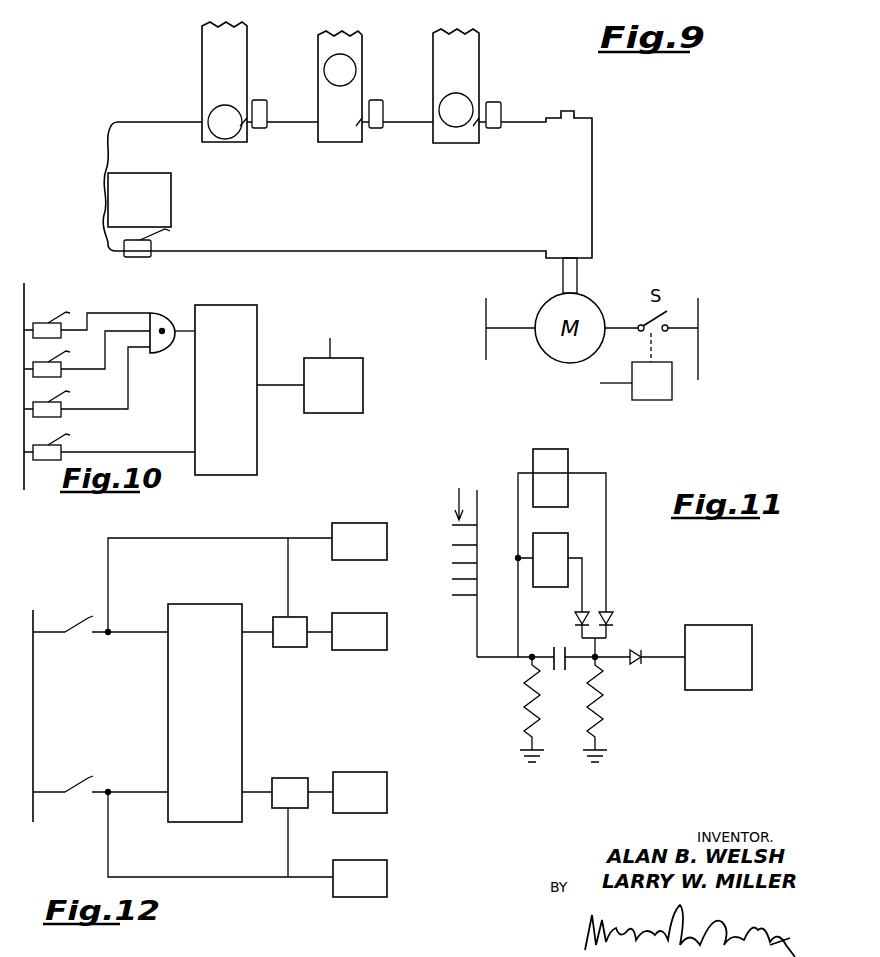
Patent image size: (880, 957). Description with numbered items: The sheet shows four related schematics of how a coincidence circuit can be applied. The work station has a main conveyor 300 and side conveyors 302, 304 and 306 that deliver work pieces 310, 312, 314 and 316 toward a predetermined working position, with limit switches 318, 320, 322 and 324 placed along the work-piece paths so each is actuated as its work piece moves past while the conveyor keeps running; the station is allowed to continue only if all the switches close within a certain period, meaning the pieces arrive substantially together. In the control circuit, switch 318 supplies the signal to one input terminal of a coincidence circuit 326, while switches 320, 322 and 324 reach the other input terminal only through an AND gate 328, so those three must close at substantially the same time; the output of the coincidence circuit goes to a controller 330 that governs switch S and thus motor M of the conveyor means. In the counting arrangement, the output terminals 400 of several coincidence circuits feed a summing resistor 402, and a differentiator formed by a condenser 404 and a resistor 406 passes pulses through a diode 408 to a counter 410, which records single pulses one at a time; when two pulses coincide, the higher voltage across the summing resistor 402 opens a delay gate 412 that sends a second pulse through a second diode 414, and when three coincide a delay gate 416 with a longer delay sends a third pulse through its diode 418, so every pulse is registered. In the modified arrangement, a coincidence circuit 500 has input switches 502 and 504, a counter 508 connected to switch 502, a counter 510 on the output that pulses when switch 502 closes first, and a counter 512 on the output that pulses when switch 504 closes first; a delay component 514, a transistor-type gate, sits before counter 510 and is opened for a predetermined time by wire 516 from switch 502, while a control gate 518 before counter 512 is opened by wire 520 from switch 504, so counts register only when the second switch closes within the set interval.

In FIG. 9, the main conveyor 300 is at (138, 128).
In FIG. 9, the side conveyor 302 is at (203, 40).
In FIG. 9, the side conveyor 304 is at (327, 44).
In FIG. 9, the side conveyor 306 is at (442, 47).
In FIG. 9, the work piece 310 is at (163, 200).
In FIG. 9, the work piece 312 is at (226, 108).
In FIG. 9, the work piece 314 is at (326, 71).
In FIG. 9, the work piece 316 is at (447, 106).
In FIG. 9, the limit switch 318 is at (153, 242).
In FIG. 10, the limit switch 318 is at (61, 444).
In FIG. 9, the limit switch 320 is at (266, 129).
In FIG. 10, the limit switch 320 is at (61, 415).
In FIG. 9, the limit switch 322 is at (380, 129).
In FIG. 10, the limit switch 322 is at (61, 375).
In FIG. 9, the limit switch 324 is at (499, 129).
In FIG. 10, the limit switch 324 is at (38, 323).
In FIG. 10, the coincidence circuit 326 is at (226, 390).
In FIG. 10, the AND gate 328 is at (170, 299).
In FIG. 9, the controller 330 is at (662, 392).
In FIG. 10, the controller 330 is at (342, 397).
In FIG. 11, the output terminals 400 is at (460, 558).
In FIG. 11, the summing resistor 402 is at (524, 712).
In FIG. 11, the condenser 404 is at (549, 644).
In FIG. 11, the resistor 406 is at (604, 712).
In FIG. 11, the diode 408 is at (643, 652).
In FIG. 11, the counter 410 is at (727, 671).
In FIG. 11, the delay gate 412 is at (558, 574).
In FIG. 11, the second diode 414 is at (575, 613).
In FIG. 11, the delay gate 416 is at (558, 496).
In FIG. 11, the diode 418 is at (608, 611).
In FIG. 12, the coincidence circuit 500 is at (214, 719).
In FIG. 12, the input switch 502 is at (100, 612).
In FIG. 12, the input switch 504 is at (100, 772).
In FIG. 12, the counter 508 is at (370, 555).
In FIG. 12, the counter 510 is at (370, 645).
In FIG. 12, the counter 512 is at (370, 805).
In FIG. 12, the delay component 514 is at (287, 632).
In FIG. 12, the wire 516 is at (288, 580).
In FIG. 12, the control gate 518 is at (297, 803).
In FIG. 12, the wire 520 is at (292, 862).